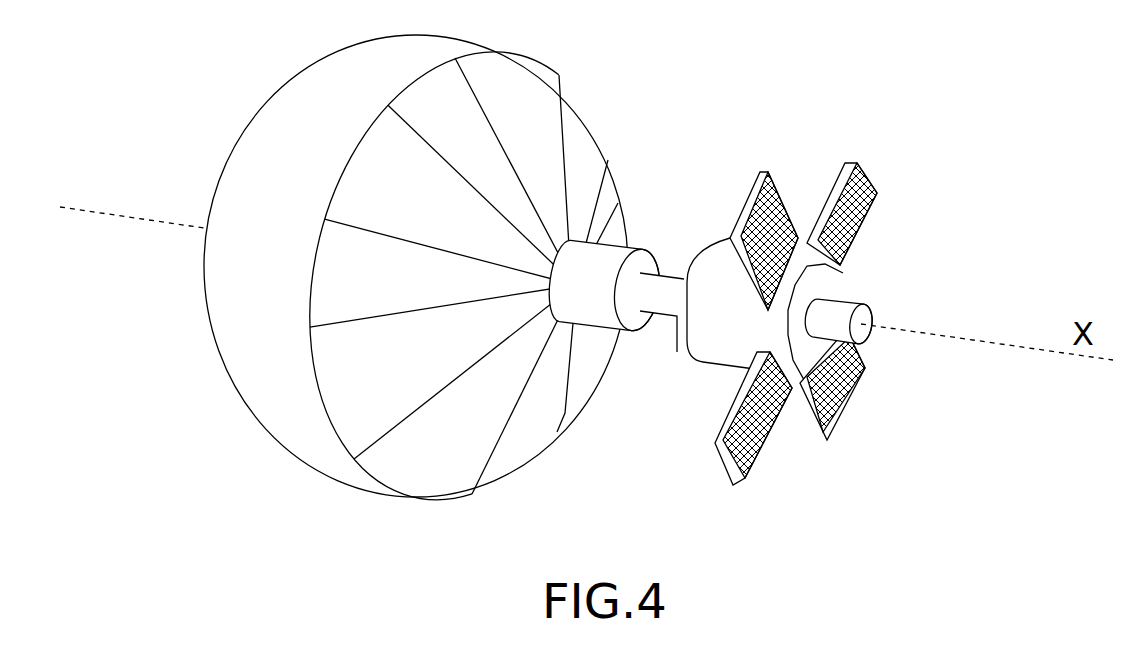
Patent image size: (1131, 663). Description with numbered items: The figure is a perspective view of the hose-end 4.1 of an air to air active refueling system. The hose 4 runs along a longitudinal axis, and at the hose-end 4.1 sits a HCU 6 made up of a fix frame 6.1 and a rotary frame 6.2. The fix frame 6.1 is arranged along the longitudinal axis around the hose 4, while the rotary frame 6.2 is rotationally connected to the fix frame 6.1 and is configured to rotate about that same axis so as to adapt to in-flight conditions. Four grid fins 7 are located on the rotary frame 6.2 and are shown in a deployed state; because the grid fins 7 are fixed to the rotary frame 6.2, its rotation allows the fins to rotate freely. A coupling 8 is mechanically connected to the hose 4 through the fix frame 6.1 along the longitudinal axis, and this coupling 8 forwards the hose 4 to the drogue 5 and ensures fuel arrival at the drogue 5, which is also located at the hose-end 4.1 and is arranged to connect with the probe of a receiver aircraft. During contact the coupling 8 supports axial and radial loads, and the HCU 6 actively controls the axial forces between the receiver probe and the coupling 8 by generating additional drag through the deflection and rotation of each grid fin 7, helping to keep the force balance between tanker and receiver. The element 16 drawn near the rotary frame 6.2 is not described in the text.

The hose 4 is at (868, 308).
The hose-end 4.1 is at (798, 272).
The drogue 5 is at (517, 73).
The HCU 6 is at (786, 299).
The fix frame 6.1 is at (677, 350).
The rotary frame 6.2 is at (710, 342).
The grid fins 7 is at (873, 180).
The coupling 8 is at (620, 203).
The flange 16 is at (840, 270).